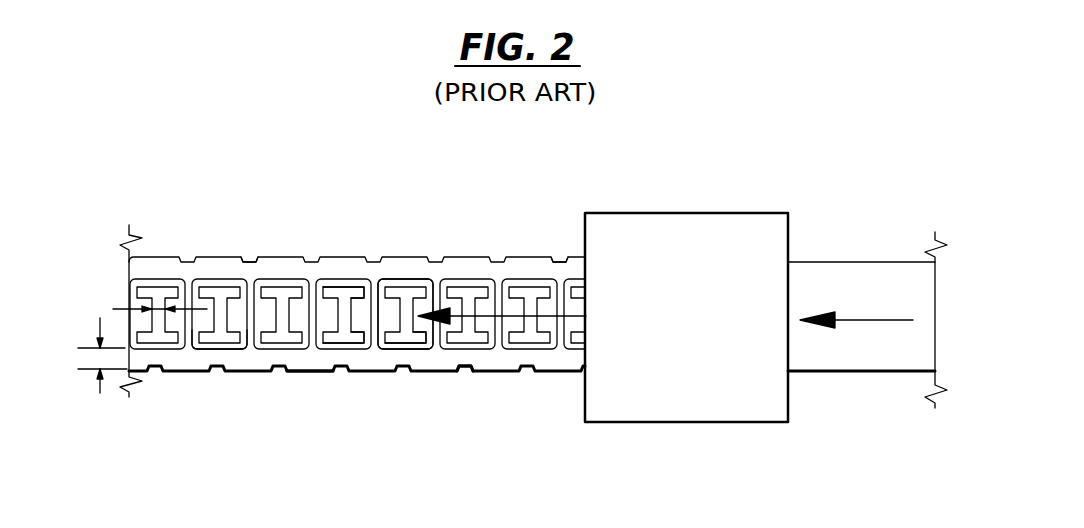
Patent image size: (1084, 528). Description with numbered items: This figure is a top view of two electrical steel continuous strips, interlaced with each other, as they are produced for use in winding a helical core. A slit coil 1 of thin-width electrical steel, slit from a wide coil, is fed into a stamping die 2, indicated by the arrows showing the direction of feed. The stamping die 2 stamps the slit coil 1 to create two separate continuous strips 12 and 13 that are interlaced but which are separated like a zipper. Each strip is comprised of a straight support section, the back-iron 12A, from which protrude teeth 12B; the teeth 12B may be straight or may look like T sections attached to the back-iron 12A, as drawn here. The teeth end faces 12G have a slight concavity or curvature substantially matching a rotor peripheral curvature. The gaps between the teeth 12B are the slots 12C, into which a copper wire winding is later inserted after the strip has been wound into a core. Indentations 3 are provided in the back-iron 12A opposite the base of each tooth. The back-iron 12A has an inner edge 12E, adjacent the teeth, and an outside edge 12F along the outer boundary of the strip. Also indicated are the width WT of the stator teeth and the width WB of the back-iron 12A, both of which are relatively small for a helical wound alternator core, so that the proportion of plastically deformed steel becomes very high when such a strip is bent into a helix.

The slit coil 1 is at (847, 278).
The stamping die 2 is at (670, 235).
The indentations 3 is at (248, 258).
The continuous strip 12 is at (332, 267).
The back-iron 12A is at (205, 265).
The teeth 12B is at (247, 337).
The slots 12C is at (430, 348).
The inner edge 12E is at (379, 347).
The outside edge 12F is at (513, 257).
The teeth end faces 12G is at (343, 285).
The continuous strip 13 is at (317, 360).
The width of the stator teeth WT is at (113, 309).
The width of the back-iron WB is at (100, 393).